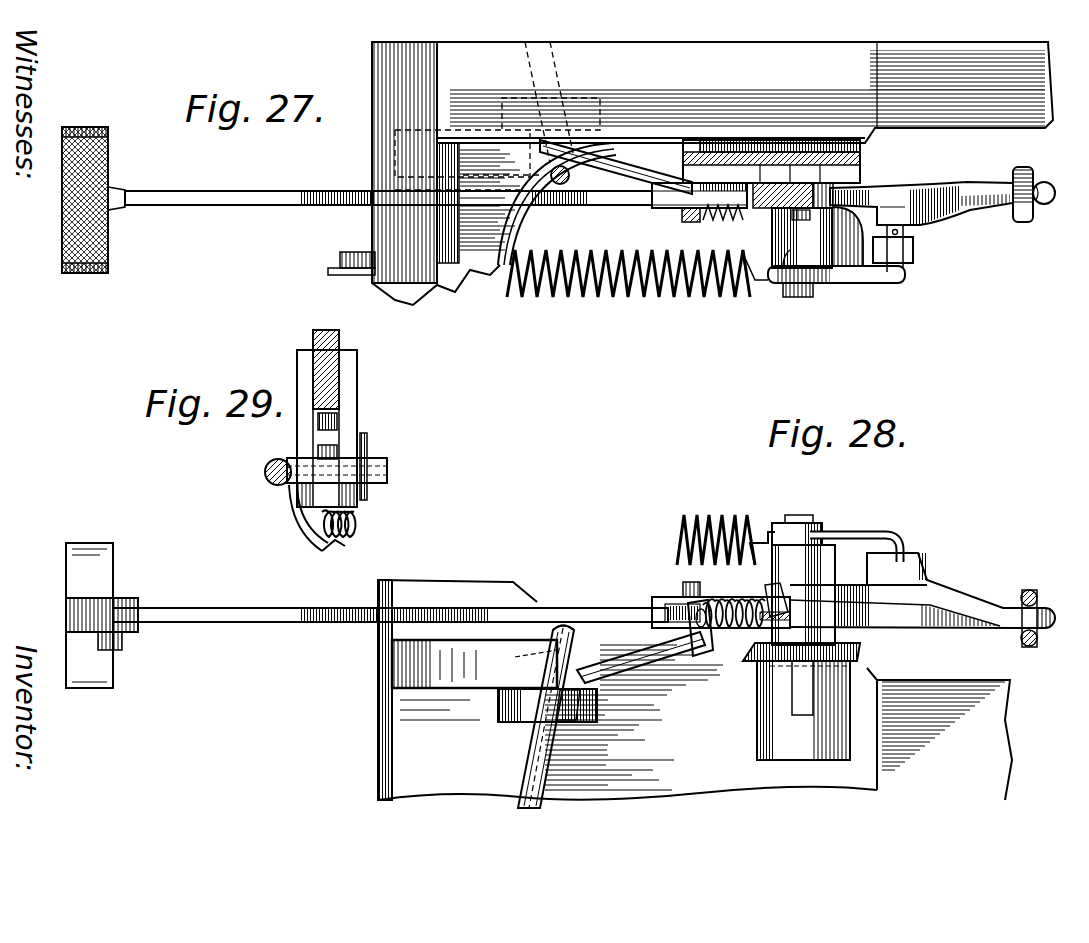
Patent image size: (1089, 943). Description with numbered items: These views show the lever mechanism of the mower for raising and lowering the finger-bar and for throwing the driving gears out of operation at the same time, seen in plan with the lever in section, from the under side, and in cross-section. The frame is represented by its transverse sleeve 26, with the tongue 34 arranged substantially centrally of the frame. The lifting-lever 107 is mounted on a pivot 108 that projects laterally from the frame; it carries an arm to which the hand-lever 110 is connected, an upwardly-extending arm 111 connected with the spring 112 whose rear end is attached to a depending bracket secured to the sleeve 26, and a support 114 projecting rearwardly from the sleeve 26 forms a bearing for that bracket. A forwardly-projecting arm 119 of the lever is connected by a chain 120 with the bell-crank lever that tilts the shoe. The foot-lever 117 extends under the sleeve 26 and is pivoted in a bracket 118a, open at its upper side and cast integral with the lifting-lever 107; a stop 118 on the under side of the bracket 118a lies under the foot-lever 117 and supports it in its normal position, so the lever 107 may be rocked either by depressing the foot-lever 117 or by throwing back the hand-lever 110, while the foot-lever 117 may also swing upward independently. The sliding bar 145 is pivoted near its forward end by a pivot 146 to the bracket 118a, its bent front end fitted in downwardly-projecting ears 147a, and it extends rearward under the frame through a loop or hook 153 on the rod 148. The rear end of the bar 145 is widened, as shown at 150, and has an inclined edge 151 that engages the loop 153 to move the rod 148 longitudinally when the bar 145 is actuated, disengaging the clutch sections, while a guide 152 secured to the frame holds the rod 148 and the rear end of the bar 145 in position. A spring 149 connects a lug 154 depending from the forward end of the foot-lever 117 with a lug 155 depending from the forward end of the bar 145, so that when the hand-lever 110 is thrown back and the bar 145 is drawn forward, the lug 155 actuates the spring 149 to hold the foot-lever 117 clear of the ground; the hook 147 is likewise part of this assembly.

In FIG. 27, the transverse sleeve 26 is at (380, 168).
In FIG. 28, the transverse sleeve 26 is at (390, 706).
In FIG. 27, the tongue 34 is at (1013, 97).
In FIG. 28, the tongue 34 is at (1010, 700).
In FIG. 27, the lifting-lever 107 is at (860, 202).
In FIG. 28, the lifting-lever 107 is at (880, 560).
In FIG. 27, the pivot 108 is at (797, 285).
In FIG. 28, the pivot 108 is at (810, 521).
In FIG. 27, the hand-lever 110 is at (780, 198).
In FIG. 27, the upwardly-extending arm 111 is at (897, 263).
In FIG. 28, the upwardly-extending arm 111 is at (917, 553).
In FIG. 27, the spring 112 is at (674, 290).
In FIG. 28, the spring 112 is at (748, 517).
In FIG. 27, the support 114 is at (343, 253).
In FIG. 27, the foot-lever 117 is at (282, 206).
In FIG. 29, the foot-lever 117 is at (340, 340).
In FIG. 28, the foot-lever 117 is at (275, 623).
In FIG. 27, the stop 118 is at (699, 195).
In FIG. 29, the stop 118 is at (328, 437).
In FIG. 28, the stop 118 is at (663, 613).
In FIG. 29, the bracket 118a is at (347, 393).
In FIG. 27, the forwardly-projecting arm 119 is at (943, 207).
In FIG. 28, the forwardly-projecting arm 119 is at (957, 623).
In FIG. 27, the chain 120 is at (1026, 224).
In FIG. 28, the chain 120 is at (1030, 594).
In FIG. 27, the sliding bar 145 is at (637, 171).
In FIG. 29, the sliding bar 145 is at (266, 467).
In FIG. 28, the sliding bar 145 is at (643, 658).
In FIG. 27, the pivot 146 is at (686, 213).
In FIG. 29, the pivot 146 is at (388, 471).
In FIG. 28, the pivot 146 is at (683, 581).
In FIG. 29, the hook 147 is at (293, 498).
In FIG. 29, the downwardly-projecting ears 147a is at (368, 496).
In FIG. 27, the rod 148 is at (555, 165).
In FIG. 28, the rod 148 is at (540, 767).
In FIG. 27, the spring 149 is at (723, 217).
In FIG. 29, the spring 149 is at (357, 530).
In FIG. 28, the spring 149 is at (730, 600).
In FIG. 28, the widened rear end 150 is at (497, 705).
In FIG. 28, the inclined edge 151 is at (515, 657).
In FIG. 28, the guide 152 is at (568, 713).
In FIG. 28, the loop or hook 153 is at (575, 650).
In FIG. 28, the lug 154 is at (793, 588).
In FIG. 29, the lug 155 is at (317, 531).
In FIG. 28, the lug 155 is at (707, 657).